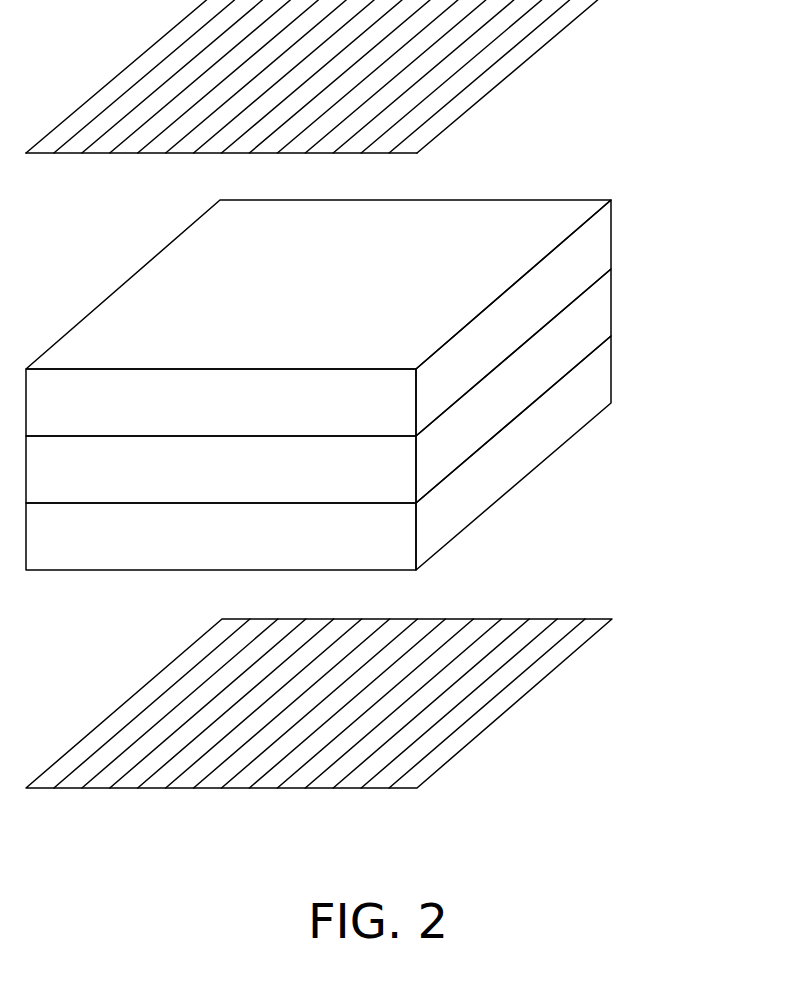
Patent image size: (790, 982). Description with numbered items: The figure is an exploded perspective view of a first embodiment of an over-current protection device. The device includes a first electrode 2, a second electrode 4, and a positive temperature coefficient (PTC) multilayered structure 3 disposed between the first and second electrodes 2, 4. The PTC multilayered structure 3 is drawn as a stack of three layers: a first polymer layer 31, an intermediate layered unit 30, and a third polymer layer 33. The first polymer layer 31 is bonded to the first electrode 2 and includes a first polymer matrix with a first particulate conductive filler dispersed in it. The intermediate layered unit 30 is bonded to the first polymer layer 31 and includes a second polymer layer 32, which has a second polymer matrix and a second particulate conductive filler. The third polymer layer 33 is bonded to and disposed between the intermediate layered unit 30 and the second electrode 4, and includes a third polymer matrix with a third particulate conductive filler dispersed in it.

The first electrode 2 is at (540, 682).
The PTC multilayered structure 3 is at (387, 385).
The second electrode 4 is at (538, 50).
The intermediate layered unit 30 is at (363, 386).
The first polymer layer 31 is at (358, 453).
The second polymer layer 32 is at (595, 308).
The third polymer layer 33 is at (595, 245).